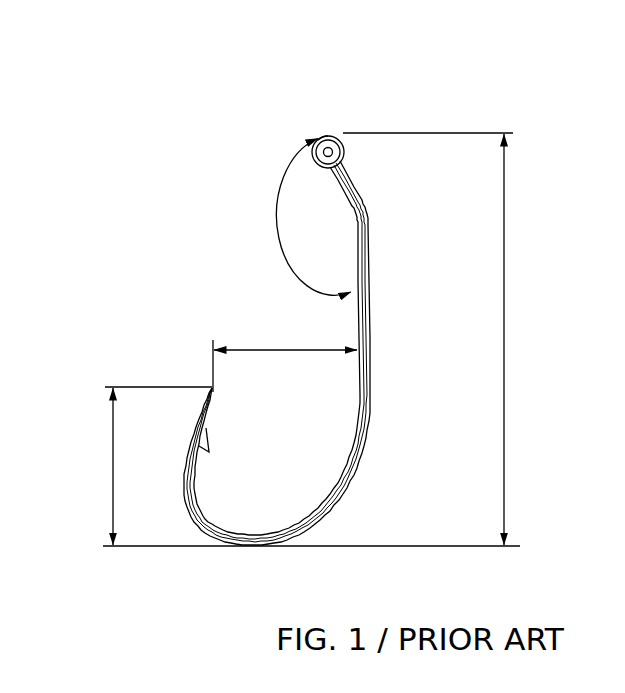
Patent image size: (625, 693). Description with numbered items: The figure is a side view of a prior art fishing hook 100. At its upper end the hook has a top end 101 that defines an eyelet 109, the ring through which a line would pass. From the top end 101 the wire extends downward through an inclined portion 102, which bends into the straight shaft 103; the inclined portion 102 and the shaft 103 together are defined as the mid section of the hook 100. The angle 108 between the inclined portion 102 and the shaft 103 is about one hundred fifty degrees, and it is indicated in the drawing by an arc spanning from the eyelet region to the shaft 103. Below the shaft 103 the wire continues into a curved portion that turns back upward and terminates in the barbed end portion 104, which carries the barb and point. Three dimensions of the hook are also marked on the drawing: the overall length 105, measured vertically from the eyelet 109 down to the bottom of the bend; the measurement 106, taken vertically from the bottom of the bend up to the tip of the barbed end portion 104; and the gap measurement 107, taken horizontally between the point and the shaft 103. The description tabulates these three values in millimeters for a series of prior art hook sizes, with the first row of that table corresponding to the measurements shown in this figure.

The fishing hook 100 is at (291, 352).
The top end 101 is at (328, 134).
The inclined portion 102 is at (397, 242).
The shaft 103 is at (374, 339).
The barbed end portion 104 is at (183, 479).
The length L 105 is at (339, 339).
The throat measurement T 106 is at (127, 466).
The gap measurement G 107 is at (285, 369).
The angle 108 is at (288, 217).
The eyelet 109 is at (317, 138).